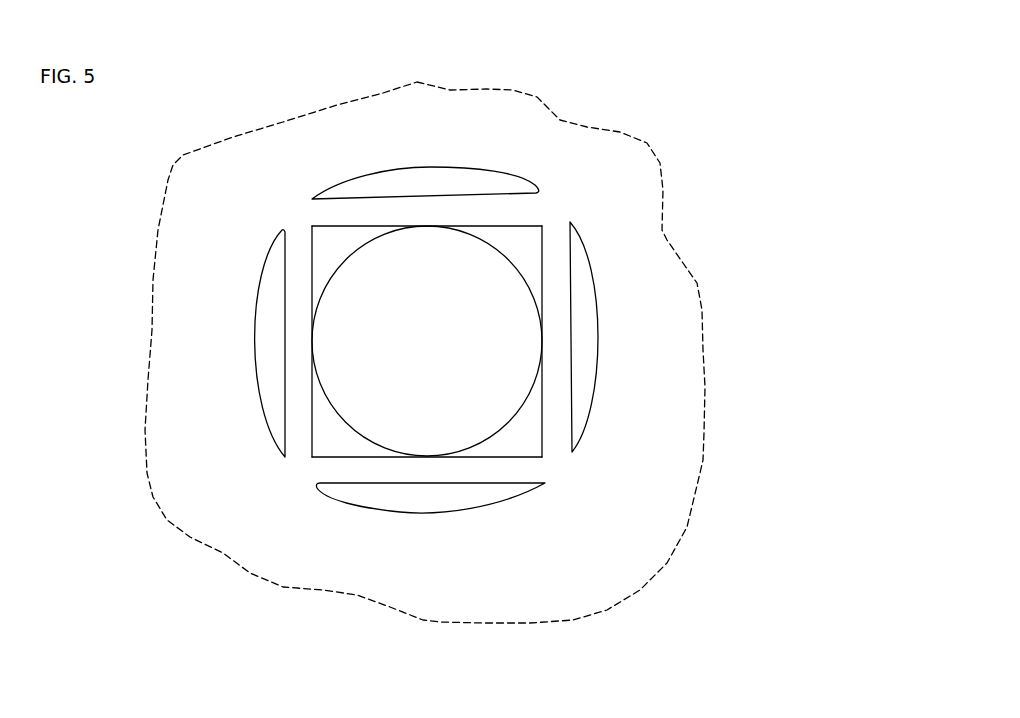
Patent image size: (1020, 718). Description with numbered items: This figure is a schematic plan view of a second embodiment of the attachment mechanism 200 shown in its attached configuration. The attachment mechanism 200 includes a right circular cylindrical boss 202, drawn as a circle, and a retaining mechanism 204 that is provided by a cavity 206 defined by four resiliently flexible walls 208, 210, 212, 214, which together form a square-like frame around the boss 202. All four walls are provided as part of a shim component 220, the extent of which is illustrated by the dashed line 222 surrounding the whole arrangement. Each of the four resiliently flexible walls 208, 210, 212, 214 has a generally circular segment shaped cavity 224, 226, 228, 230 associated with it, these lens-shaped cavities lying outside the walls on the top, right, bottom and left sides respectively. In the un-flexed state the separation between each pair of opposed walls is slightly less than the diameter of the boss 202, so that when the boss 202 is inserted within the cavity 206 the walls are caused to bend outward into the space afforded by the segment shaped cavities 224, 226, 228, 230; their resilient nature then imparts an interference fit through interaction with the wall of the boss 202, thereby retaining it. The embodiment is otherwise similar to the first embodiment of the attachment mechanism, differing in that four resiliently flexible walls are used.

The attachment mechanism 200 is at (652, 97).
The right circular cylindrical boss 202 is at (449, 382).
The retaining mechanism 204 is at (630, 212).
The cavity 206 is at (326, 240).
The resiliently flexible wall 208 is at (500, 213).
The resiliently flexible wall 210 is at (562, 438).
The resiliently flexible wall 212 is at (333, 468).
The resiliently flexible wall 214 is at (300, 238).
The shim component 220 is at (666, 344).
The dashed line 222 is at (705, 348).
The circular segment shaped cavity 224 is at (433, 180).
The circular segment shaped cavity 226 is at (588, 350).
The circular segment shaped cavity 228 is at (448, 495).
The circular segment shaped cavity 230 is at (273, 343).